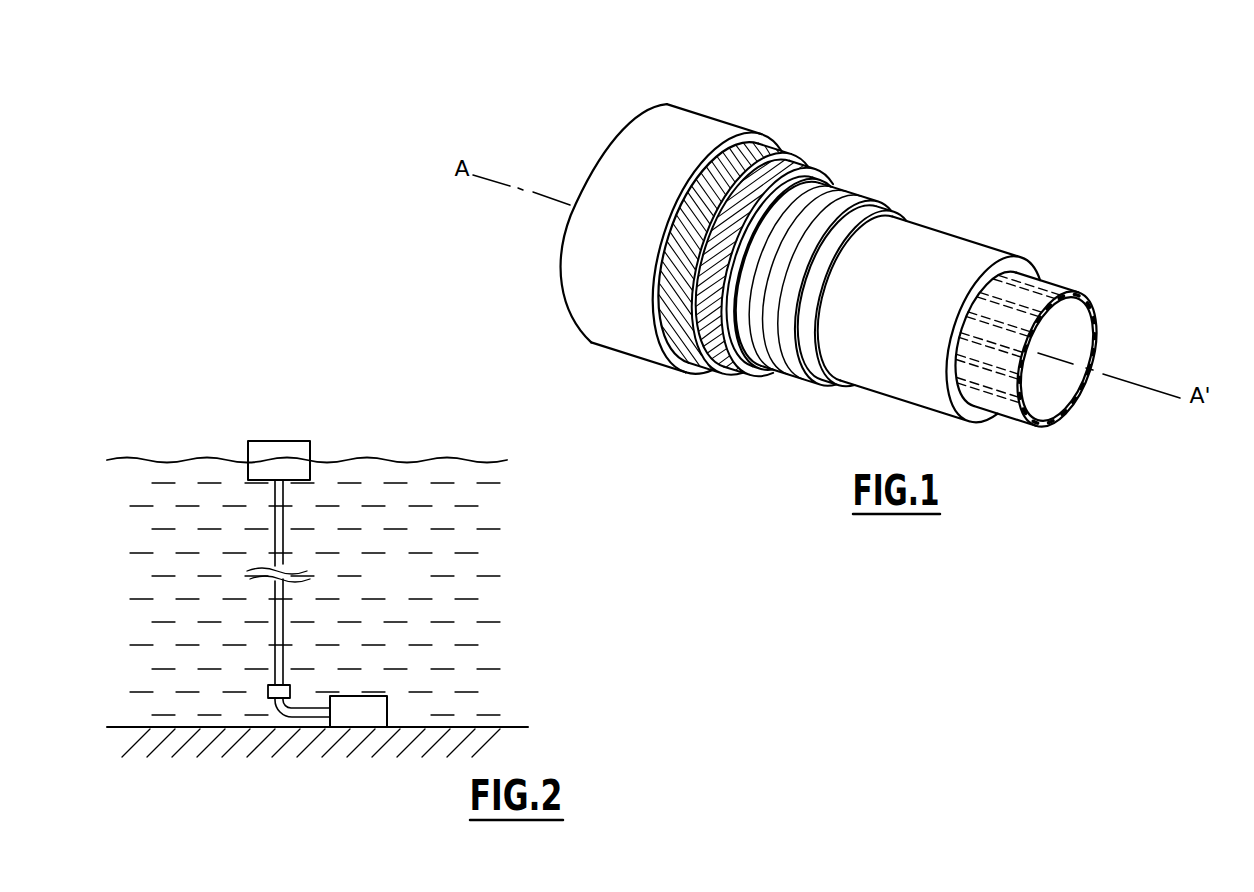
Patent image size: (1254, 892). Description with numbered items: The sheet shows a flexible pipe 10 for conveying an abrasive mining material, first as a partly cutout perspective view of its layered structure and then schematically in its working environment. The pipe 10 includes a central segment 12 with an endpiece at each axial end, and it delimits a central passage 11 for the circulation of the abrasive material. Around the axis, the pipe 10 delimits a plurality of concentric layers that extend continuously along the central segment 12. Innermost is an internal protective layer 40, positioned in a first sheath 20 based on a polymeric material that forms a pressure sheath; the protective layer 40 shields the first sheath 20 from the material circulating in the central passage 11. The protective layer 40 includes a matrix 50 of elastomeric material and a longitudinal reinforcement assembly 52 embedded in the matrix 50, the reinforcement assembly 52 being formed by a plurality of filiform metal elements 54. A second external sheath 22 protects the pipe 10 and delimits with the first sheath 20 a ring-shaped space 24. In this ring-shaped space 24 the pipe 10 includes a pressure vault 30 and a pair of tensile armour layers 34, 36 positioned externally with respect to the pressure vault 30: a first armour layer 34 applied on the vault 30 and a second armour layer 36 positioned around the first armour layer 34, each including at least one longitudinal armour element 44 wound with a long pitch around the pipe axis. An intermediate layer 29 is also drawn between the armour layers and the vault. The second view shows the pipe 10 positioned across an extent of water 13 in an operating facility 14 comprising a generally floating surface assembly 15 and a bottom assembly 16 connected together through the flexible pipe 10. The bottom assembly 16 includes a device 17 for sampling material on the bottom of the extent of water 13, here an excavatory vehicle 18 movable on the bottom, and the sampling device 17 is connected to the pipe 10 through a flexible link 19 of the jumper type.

In FIG. 1, the flexible pipe 10 is at (828, 279).
In FIG. 2, the flexible pipe 10 is at (242, 543).
In FIG. 1, the central passage 11 is at (1063, 323).
In FIG. 1, the central segment 12 is at (771, 262).
In FIG. 2, the extent of water 13 is at (315, 599).
In FIG. 2, the operating facility 14 is at (347, 452).
In FIG. 2, the surface assembly 15 is at (280, 458).
In FIG. 2, the bottom assembly 16 is at (359, 706).
In FIG. 2, the sampling device 17 is at (359, 724).
In FIG. 2, the excavatory vehicle 18 is at (362, 714).
In FIG. 2, the flexible link 19 is at (307, 714).
In FIG. 1, the first sheath 20 is at (940, 262).
In FIG. 1, the second external sheath 22 is at (673, 145).
In FIG. 1, the ring-shaped space 24 is at (783, 385).
In FIG. 1, the anti-wear layer 29 is at (732, 363).
In FIG. 1, the pressure vault 30 is at (833, 211).
In FIG. 1, the first armour layer 34 is at (768, 182).
In FIG. 1, the second armour layer 36 is at (659, 212).
In FIG. 1, the internal protective layer 40 is at (1037, 303).
In FIG. 1, the longitudinal armour element 44 is at (693, 275).
In FIG. 1, the matrix 50 is at (1003, 393).
In FIG. 1, the longitudinal reinforcement assembly 52 is at (1077, 416).
In FIG. 1, the filiform metal elements 54 is at (1063, 287).